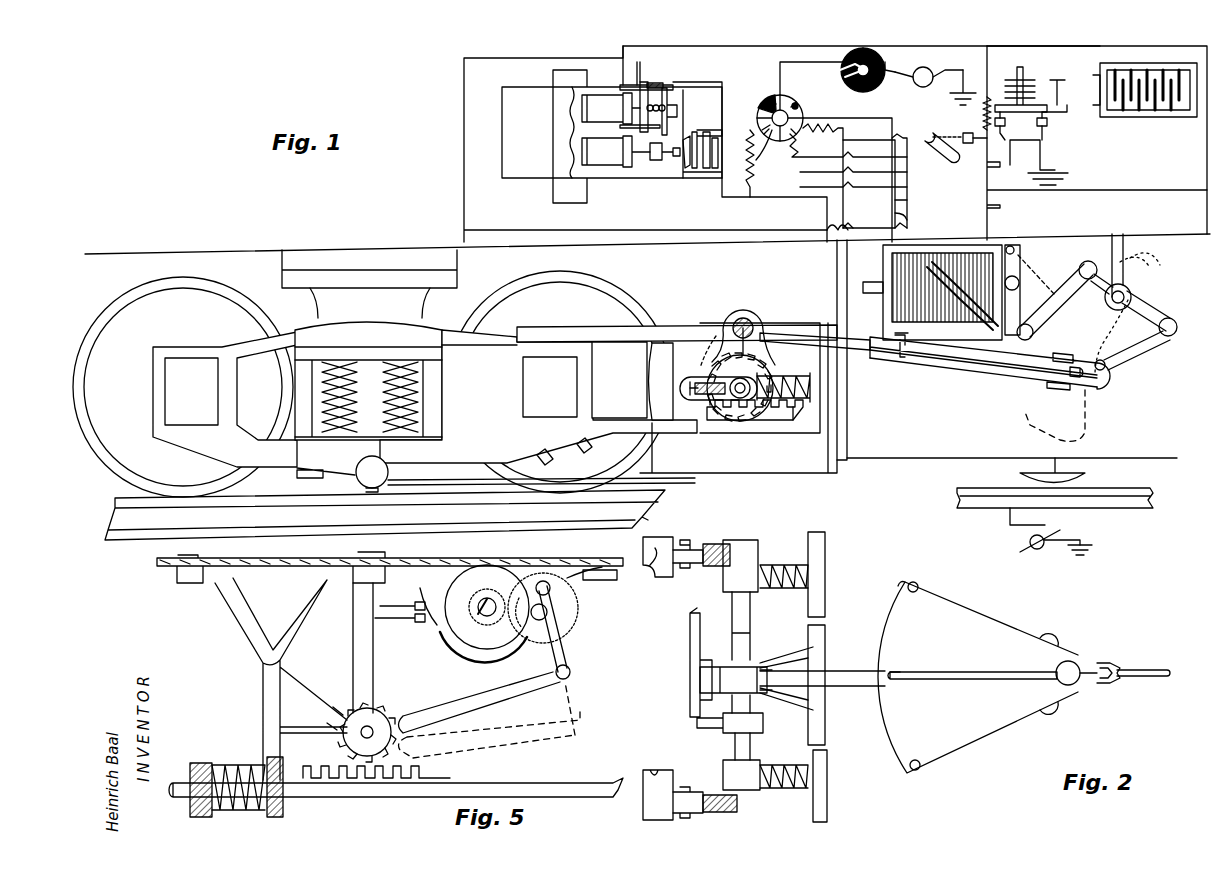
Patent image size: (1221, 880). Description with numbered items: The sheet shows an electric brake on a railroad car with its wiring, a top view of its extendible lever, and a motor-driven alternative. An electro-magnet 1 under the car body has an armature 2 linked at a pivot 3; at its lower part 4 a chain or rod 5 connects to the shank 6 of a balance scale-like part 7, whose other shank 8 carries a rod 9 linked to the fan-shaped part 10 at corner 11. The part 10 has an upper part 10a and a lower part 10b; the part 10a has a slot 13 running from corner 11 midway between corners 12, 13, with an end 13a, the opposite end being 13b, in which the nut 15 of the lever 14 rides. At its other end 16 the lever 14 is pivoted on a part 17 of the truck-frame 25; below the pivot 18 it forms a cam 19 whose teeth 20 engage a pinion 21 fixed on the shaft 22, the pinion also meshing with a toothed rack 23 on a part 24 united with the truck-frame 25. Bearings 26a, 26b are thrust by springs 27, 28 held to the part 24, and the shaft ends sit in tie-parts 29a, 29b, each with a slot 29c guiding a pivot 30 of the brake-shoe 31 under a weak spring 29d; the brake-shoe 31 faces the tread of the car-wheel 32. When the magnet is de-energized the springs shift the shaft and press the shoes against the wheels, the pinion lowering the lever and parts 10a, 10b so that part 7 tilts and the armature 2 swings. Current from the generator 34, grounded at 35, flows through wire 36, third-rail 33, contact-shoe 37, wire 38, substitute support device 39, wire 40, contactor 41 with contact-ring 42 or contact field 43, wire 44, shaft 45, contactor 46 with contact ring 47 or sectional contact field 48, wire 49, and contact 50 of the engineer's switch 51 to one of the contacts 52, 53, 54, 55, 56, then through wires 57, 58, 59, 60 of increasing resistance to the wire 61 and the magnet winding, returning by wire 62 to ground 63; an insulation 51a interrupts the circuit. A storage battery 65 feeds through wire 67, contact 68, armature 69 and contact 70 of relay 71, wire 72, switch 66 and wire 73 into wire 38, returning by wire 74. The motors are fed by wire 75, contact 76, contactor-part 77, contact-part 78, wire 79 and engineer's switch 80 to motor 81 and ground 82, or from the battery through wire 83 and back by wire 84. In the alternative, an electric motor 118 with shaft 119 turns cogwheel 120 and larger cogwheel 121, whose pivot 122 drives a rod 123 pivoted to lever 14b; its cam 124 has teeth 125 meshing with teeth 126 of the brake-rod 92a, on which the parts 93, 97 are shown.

In FIG. 1, the electro-magnet 1 is at (932, 312).
In FIG. 1, the armature 2 is at (1020, 278).
In FIG. 1, the pivot 3 is at (1016, 250).
In FIG. 1, the lower part of armature 4 is at (1024, 314).
In FIG. 1, the chain or rod 5 is at (1059, 299).
In FIG. 1, the shank 6 is at (1108, 272).
In FIG. 1, the balance scale-like part 7 is at (1092, 347).
In FIG. 1, the other shank 8 is at (1150, 316).
In FIG. 1, the rod 9 is at (1130, 350).
In FIG. 2, the rod 9 is at (1150, 678).
In FIG. 1, the fan-shaped part 10 is at (990, 360).
In FIG. 2, the fan-shaped part 10 is at (978, 677).
In FIG. 1, the upper part of fan-shaped part 10a is at (1005, 356).
In FIG. 2, the upper part of fan-shaped part 10a is at (944, 651).
In FIG. 1, the lower part of fan-shaped part 10b is at (950, 368).
In FIG. 1, the corner 11 is at (1115, 371).
In FIG. 2, the corner 11 is at (1117, 662).
In FIG. 2, the corner 12 is at (909, 574).
In FIG. 2, the slot 13 is at (972, 670).
In FIG. 2, the slot end 13a is at (1078, 690).
In FIG. 2, the slot end 13b is at (904, 660).
In FIG. 1, the lever 14 is at (786, 336).
In FIG. 2, the lever 14 is at (840, 670).
In FIG. 5, the lever 14b is at (495, 690).
In FIG. 2, the nut 15 is at (1072, 662).
In FIG. 1, the end-part of lever 16 is at (748, 312).
In FIG. 2, the end-part of lever 16 is at (730, 680).
In FIG. 1, the part 17 is at (716, 334).
In FIG. 2, the part 17 is at (726, 670).
In FIG. 1, the pivot 18 is at (743, 318).
In FIG. 1, the cam 19 is at (736, 337).
In FIG. 1, the teeth 20 is at (768, 365).
In FIG. 1, the pinion 21 is at (745, 422).
In FIG. 1, the shaft 22 is at (740, 398).
In FIG. 2, the shaft 22 is at (752, 611).
In FIG. 1, the toothed rack 23 is at (775, 422).
In FIG. 2, the toothed rack 23 is at (790, 695).
In FIG. 1, the part 24 is at (812, 425).
In FIG. 2, the part 24 is at (827, 756).
In FIG. 1, the truck-frame 25 is at (495, 403).
In FIG. 2, the bearing 26a is at (735, 775).
In FIG. 2, the bearing 26b is at (752, 565).
In FIG. 2, the spring 27 is at (784, 782).
In FIG. 2, the spring 28 is at (784, 567).
In FIG. 1, the tie-part 29a is at (715, 383).
In FIG. 2, the tie-part 29a is at (745, 795).
In FIG. 2, the tie-part 29b is at (708, 542).
In FIG. 1, the slot 29c is at (715, 403).
In FIG. 1, the spring 29d is at (697, 380).
In FIG. 1, the pivot 30 is at (700, 400).
In FIG. 1, the brake-shoe 31 is at (665, 383).
In FIG. 2, the brake-shoe 31 is at (643, 812).
In FIG. 1, the car-wheel 32 is at (619, 380).
In FIG. 1, the third-rail 33 is at (1068, 498).
In FIG. 1, the generator 34 is at (1050, 533).
In FIG. 1, the ground 35 is at (1091, 549).
In FIG. 1, the wire 36 is at (1010, 522).
In FIG. 1, the contact-shoe 37 is at (1085, 478).
In FIG. 1, the wire 38 is at (1012, 450).
In FIG. 1, the substitute support device 39 is at (372, 474).
In FIG. 1, the wire 40 is at (790, 468).
In FIG. 1, the contactor 41 is at (683, 150).
In FIG. 1, the contact-ring 42 is at (718, 165).
In FIG. 1, the contact field 43 is at (705, 148).
In FIG. 1, the wire 44 is at (722, 96).
In FIG. 1, the shaft 45 is at (668, 105).
In FIG. 1, the contactor 46 is at (655, 99).
In FIG. 1, the contact ring 47 is at (677, 113).
In FIG. 1, the sectional contact field 48 is at (650, 142).
In FIG. 1, the wire 49 is at (782, 78).
In FIG. 1, the contact 50 is at (804, 116).
In FIG. 1, the engineer's switch 51 is at (753, 118).
In FIG. 1, the insulation 51a is at (762, 93).
In FIG. 1, the contact 52 is at (799, 103).
In FIG. 1, the contact 53 is at (823, 136).
In FIG. 1, the contact 54 is at (847, 149).
In FIG. 1, the contact 55 is at (760, 163).
In FIG. 1, the contact 56 is at (753, 139).
In FIG. 1, the wire 57 is at (870, 126).
In FIG. 1, the wire 58 is at (875, 181).
In FIG. 1, the wire 59 is at (853, 167).
In FIG. 1, the wire 60 is at (810, 190).
In FIG. 1, the wire 61 is at (908, 213).
In FIG. 1, the wire 62 is at (988, 210).
In FIG. 1, the ground 63 is at (1070, 176).
In FIG. 1, the storage battery 65 is at (1157, 108).
In FIG. 1, the switch 66 is at (944, 138).
In FIG. 1, the wire 67 is at (1093, 86).
In FIG. 1, the contact 68 is at (1048, 128).
In FIG. 1, the armature 69 is at (1028, 104).
In FIG. 1, the contact 70 is at (1013, 134).
In FIG. 1, the relay 71 is at (1018, 89).
In FIG. 1, the wire 72 is at (977, 150).
In FIG. 1, the wire 73 is at (845, 204).
In FIG. 1, the wire 74 is at (1149, 212).
In FIG. 1, the wire 75 is at (464, 215).
In FIG. 1, the contact 76 is at (642, 65).
In FIG. 1, the contactor-part 77 is at (636, 73).
In FIG. 1, the contact-part 78 is at (625, 88).
In FIG. 1, the wire 79 is at (877, 54).
In FIG. 1, the engineer's switch 80 is at (851, 70).
In FIG. 1, the electric motor 81 is at (935, 66).
In FIG. 1, the ground 82 is at (950, 100).
In FIG. 1, the wire 83 is at (908, 190).
In FIG. 1, the wire 84 is at (1043, 53).
In FIG. 5, the brake-rod 92a is at (300, 790).
In FIG. 5, the collar 93 is at (205, 762).
In FIG. 5, the spring 97 is at (240, 765).
In FIG. 5, the electric motor 118 is at (460, 612).
In FIG. 5, the shaft 119 is at (485, 614).
In FIG. 5, the cogwheel 120 is at (490, 597).
In FIG. 5, the cogwheel 121 is at (570, 615).
In FIG. 5, the pivot 122 is at (552, 590).
In FIG. 5, the rod 123 is at (570, 655).
In FIG. 5, the cam 124 is at (345, 735).
In FIG. 5, the teeth 125 is at (415, 752).
In FIG. 5, the teeth 126 is at (385, 780).